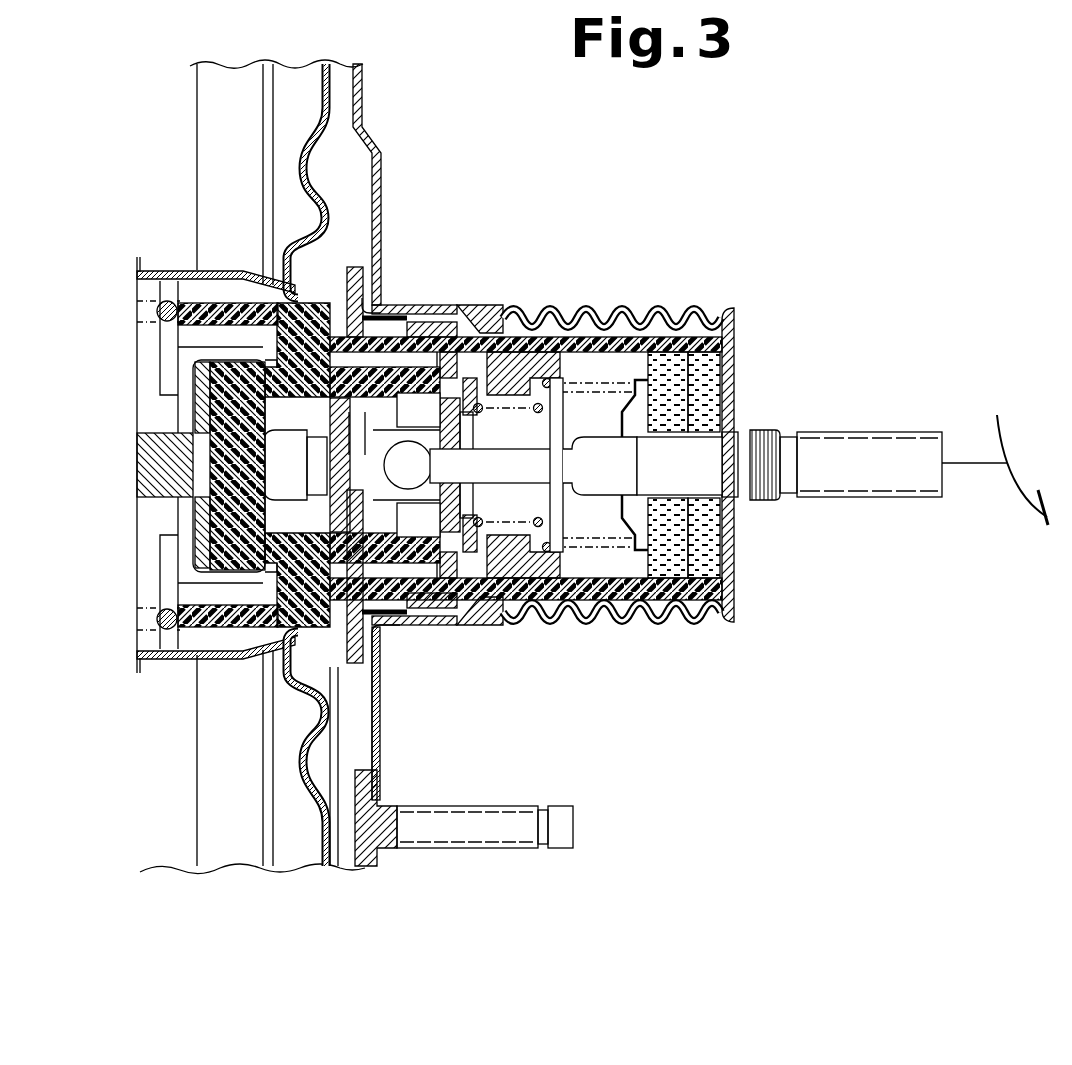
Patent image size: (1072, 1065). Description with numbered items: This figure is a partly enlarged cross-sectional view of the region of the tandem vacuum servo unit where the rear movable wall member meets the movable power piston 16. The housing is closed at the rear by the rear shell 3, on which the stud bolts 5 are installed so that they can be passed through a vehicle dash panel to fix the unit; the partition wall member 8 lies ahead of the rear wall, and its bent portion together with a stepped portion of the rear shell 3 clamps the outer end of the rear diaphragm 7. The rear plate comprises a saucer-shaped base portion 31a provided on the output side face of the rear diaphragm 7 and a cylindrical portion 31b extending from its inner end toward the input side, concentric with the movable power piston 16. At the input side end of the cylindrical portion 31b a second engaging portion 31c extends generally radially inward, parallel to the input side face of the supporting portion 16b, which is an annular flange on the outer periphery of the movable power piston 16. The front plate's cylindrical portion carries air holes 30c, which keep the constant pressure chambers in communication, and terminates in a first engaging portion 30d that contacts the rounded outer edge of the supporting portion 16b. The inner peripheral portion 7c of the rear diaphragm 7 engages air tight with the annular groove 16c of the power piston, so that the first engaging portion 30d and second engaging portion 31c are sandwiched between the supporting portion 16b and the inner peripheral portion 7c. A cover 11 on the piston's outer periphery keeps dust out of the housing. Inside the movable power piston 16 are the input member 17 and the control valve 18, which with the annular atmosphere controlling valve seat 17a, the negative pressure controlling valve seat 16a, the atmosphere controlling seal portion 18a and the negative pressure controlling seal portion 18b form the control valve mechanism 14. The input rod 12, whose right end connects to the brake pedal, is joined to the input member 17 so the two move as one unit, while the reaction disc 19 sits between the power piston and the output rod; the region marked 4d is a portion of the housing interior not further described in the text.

The rear shell 3 is at (380, 190).
The pipe bore portion 4d is at (352, 163).
The stud bolt 5 is at (522, 830).
The rear diaphragm 7 is at (333, 226).
The inner peripheral portion of the rear diaphragm 7c is at (360, 293).
The partition wall member 8 is at (1002, 428).
The cover 11 is at (702, 310).
The input rod 12 is at (862, 452).
The control valve mechanism 14 is at (570, 522).
The movable power piston 16 is at (640, 600).
The negative pressure controlling valve seat 16a is at (458, 350).
The supporting portion 16b is at (270, 297).
The annular groove 16c is at (337, 670).
The input member 17 is at (380, 492).
The atmosphere controlling valve seat 17a is at (445, 537).
The control valve 18 is at (503, 607).
The atmosphere controlling seal portion 18a is at (515, 340).
The negative pressure controlling seal portion 18b is at (483, 605).
The reaction disc 19 is at (232, 533).
The air hole 30c is at (285, 288).
The first engaging portion 30d is at (155, 311).
The base portion 31a is at (307, 797).
The cylindrical portion 31b is at (283, 677).
The second engaging portion 31c is at (320, 268).